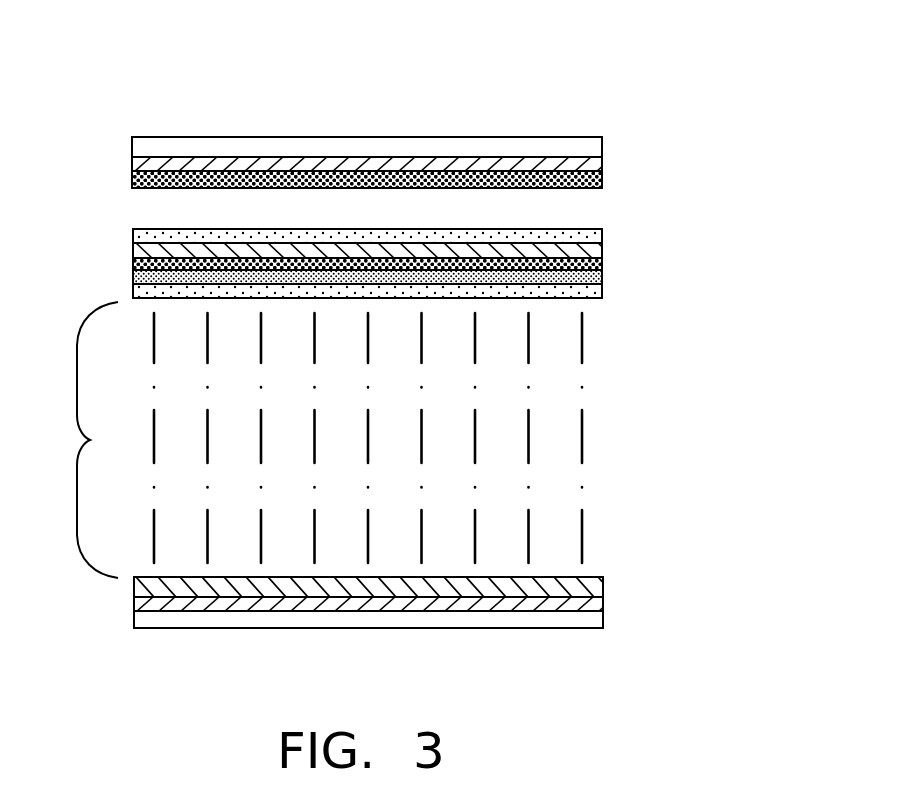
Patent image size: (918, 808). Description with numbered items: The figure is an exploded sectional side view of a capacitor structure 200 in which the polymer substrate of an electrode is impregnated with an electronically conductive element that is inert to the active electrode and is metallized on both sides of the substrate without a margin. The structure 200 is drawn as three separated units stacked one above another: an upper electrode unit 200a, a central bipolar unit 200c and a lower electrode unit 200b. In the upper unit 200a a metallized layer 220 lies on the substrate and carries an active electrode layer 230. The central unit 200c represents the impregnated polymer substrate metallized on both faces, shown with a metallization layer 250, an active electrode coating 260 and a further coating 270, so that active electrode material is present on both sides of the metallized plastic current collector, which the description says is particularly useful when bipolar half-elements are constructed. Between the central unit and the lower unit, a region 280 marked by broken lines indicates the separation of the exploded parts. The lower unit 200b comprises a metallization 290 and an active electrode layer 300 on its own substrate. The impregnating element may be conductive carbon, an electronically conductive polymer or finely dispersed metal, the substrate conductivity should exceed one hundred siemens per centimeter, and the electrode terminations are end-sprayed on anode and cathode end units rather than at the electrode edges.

The electrochromic device assembly 200 is at (648, 63).
The first substrate sub-assembly 200a is at (639, 159).
The second substrate sub-assembly 200b is at (642, 603).
The electrolyte sub-assembly 200c is at (639, 259).
The conductive layer 220 is at (150, 161).
The electrochromic layer 230 is at (600, 180).
The ion conductor layer 250 is at (135, 250).
The counter electrode layer 260 is at (135, 263).
The electrolyte layer 270 is at (600, 280).
The gap / alignment region 280 is at (86, 440).
The conductive layer 290 is at (605, 577).
The adhesive layer 300 is at (150, 600).